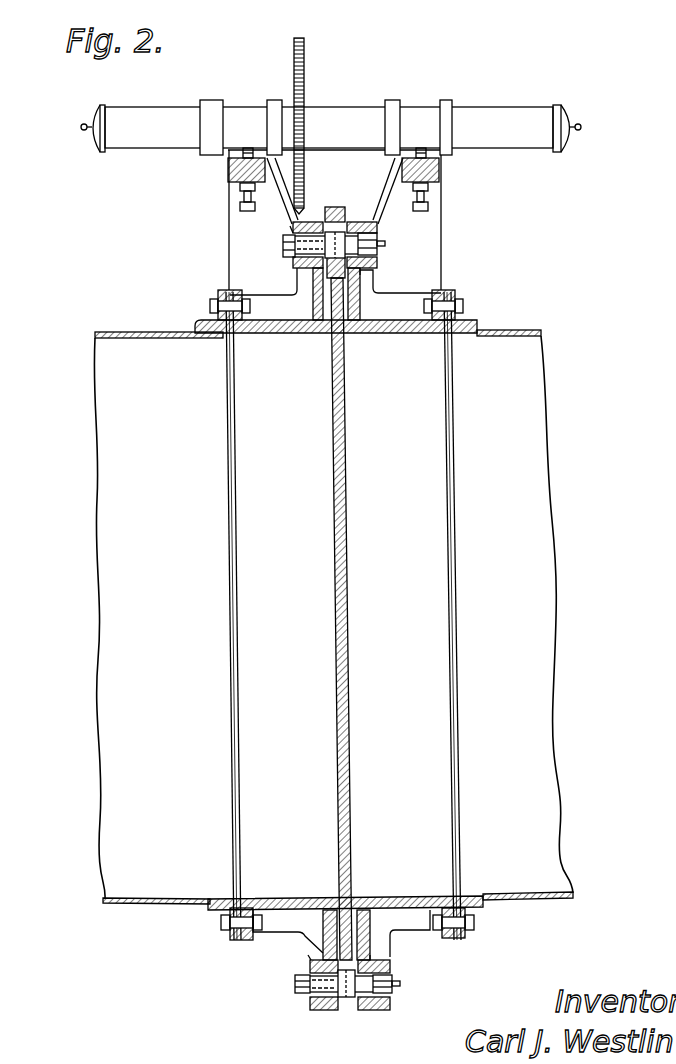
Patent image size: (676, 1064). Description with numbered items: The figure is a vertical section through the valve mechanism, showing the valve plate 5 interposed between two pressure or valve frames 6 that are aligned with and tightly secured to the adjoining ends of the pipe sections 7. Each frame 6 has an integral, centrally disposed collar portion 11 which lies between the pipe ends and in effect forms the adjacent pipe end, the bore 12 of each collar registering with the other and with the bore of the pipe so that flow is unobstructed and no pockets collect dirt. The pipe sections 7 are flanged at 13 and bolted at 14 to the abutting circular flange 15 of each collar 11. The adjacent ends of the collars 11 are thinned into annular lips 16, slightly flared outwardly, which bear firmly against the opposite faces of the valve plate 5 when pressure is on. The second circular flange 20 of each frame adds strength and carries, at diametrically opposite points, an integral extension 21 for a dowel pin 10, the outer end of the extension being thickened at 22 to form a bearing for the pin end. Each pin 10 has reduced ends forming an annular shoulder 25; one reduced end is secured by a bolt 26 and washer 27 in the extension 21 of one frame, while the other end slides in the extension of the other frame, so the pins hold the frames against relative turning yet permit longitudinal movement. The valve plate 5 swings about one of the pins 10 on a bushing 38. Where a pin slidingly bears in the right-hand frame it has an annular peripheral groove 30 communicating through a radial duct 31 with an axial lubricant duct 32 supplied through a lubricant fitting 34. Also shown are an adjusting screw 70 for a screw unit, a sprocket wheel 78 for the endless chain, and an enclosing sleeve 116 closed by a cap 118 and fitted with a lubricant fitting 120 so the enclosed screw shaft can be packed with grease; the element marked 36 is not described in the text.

The valve plate 5 is at (337, 413).
The valve frame 6 is at (222, 235).
The pipe section 7 is at (128, 332).
The dowel pin 10 is at (382, 246).
The collar portion 11 is at (273, 334).
The bore 12 is at (300, 897).
The pipe flange 13 is at (220, 291).
The bolt 14 is at (211, 304).
The circular flange 15 is at (222, 340).
The annular lip 16 is at (328, 336).
The second circular flange 20 is at (313, 308).
The integral extension 21 is at (357, 293).
The thickened bearing portion 22 is at (313, 220).
The annular shoulder 25 is at (296, 266).
The bolt 26 is at (282, 247).
The washer 27 is at (283, 232).
The annular peripheral groove 30 is at (380, 222).
The radial duct 31 is at (366, 276).
The axial lubricant duct 32 is at (353, 222).
The lubricant fitting 34 is at (386, 243).
The flange rib 36 is at (259, 335).
The bushing 38 is at (334, 208).
The adjusting screw 70 is at (240, 205).
The sprocket wheel 78 is at (305, 62).
The enclosing sleeve 116 is at (137, 120).
The closure cap 118 is at (94, 113).
The lubricant fitting 120 is at (81, 127).